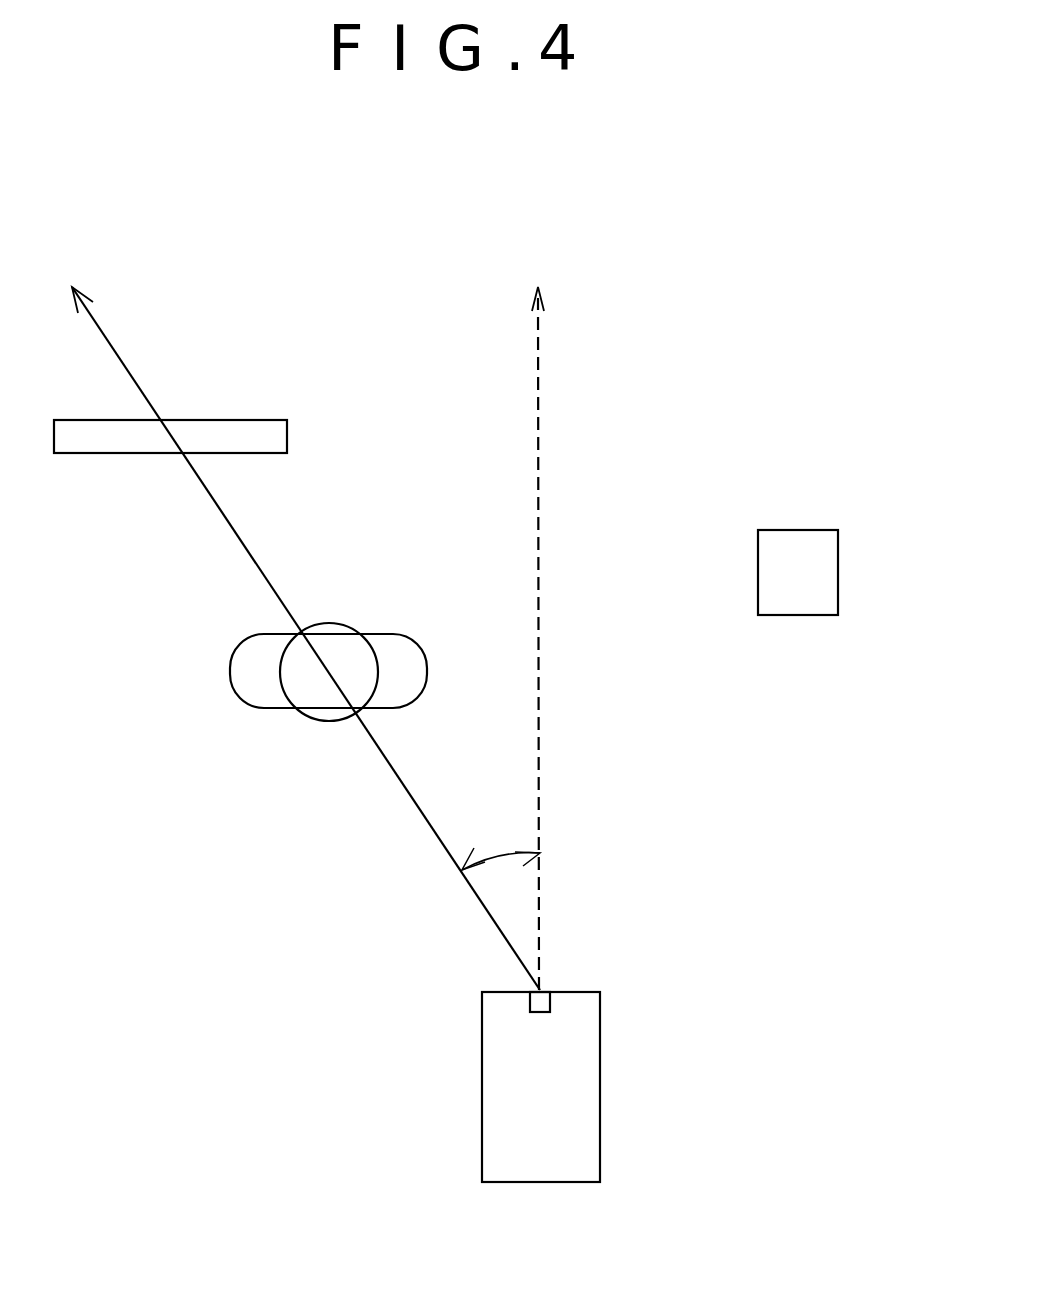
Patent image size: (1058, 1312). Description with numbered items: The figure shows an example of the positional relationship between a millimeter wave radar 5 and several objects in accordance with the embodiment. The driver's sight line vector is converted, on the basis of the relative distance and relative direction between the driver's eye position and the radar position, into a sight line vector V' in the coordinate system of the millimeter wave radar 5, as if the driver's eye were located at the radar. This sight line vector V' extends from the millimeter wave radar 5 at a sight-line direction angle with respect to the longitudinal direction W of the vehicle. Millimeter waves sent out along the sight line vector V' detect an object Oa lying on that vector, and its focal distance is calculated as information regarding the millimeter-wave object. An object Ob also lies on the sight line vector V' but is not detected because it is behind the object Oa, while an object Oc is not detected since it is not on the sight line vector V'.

The millimeter wave radar 5 is at (543, 988).
The object Oa is at (387, 630).
The object Ob is at (265, 420).
The object Oc is at (838, 572).
The sight line vector V' is at (306, 638).
The longitudinal direction of the vehicle W is at (538, 343).